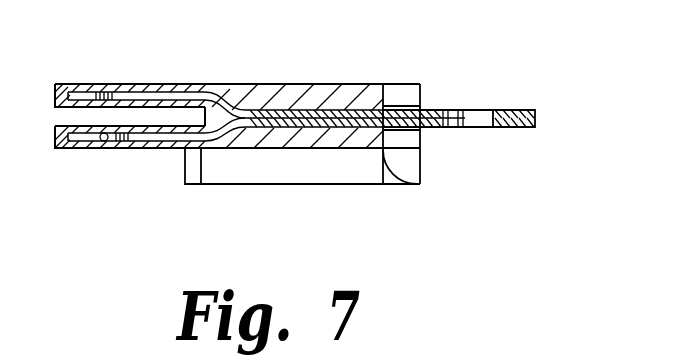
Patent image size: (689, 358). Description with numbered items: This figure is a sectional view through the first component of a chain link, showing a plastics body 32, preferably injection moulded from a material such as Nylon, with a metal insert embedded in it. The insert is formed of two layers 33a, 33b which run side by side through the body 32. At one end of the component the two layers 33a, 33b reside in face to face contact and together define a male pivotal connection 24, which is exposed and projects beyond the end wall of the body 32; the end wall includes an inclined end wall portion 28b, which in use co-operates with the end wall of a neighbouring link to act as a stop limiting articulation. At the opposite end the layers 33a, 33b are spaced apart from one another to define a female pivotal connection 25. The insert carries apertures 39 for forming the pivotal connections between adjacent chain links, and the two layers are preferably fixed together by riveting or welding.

The male pivotal connection 24 is at (517, 108).
The female pivotal connection 25 is at (106, 141).
The end wall portion 28b is at (400, 104).
The plastics body 32 is at (367, 85).
The layer of metal insert 33a is at (317, 110).
The layer of metal insert 33b is at (306, 124).
The apertures 39 is at (148, 100).